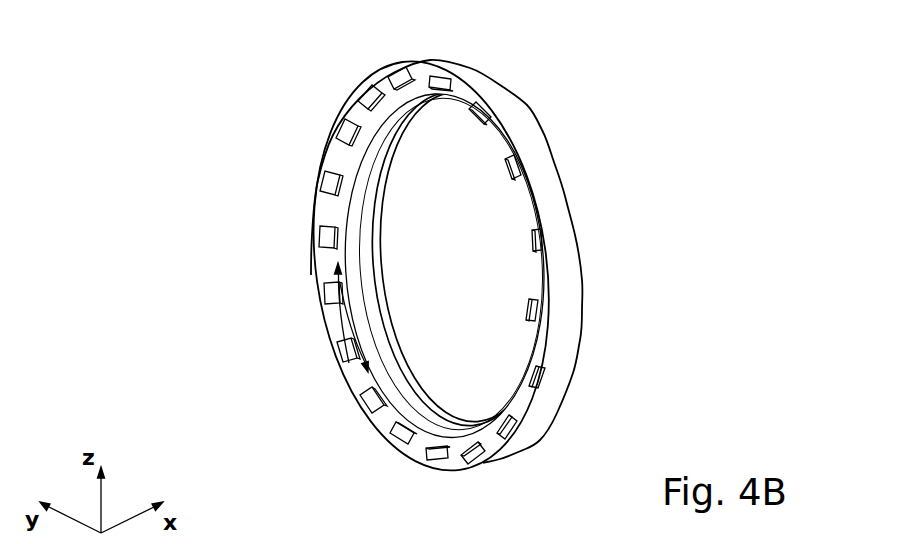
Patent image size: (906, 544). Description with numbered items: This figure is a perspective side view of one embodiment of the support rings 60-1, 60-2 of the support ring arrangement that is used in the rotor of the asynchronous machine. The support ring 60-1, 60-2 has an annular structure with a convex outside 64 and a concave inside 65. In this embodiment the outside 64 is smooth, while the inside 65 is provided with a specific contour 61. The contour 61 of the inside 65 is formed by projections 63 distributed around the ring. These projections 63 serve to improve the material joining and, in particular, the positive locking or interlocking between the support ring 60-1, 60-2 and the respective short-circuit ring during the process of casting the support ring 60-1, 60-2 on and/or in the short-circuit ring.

The support ring 60-1 is at (300, 88).
The support ring 60-2 is at (237, 49).
The outside 64 is at (519, 125).
The inside 65 is at (341, 216).
The contour 61 is at (340, 320).
The projections 63 is at (340, 362).